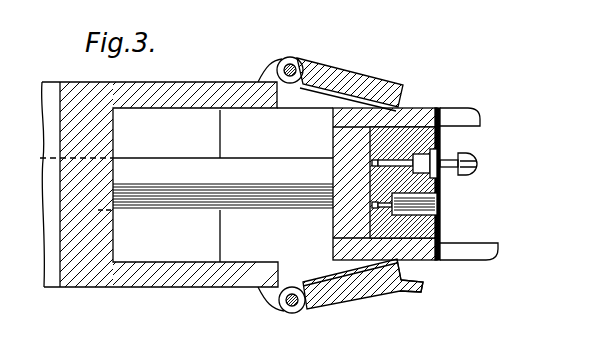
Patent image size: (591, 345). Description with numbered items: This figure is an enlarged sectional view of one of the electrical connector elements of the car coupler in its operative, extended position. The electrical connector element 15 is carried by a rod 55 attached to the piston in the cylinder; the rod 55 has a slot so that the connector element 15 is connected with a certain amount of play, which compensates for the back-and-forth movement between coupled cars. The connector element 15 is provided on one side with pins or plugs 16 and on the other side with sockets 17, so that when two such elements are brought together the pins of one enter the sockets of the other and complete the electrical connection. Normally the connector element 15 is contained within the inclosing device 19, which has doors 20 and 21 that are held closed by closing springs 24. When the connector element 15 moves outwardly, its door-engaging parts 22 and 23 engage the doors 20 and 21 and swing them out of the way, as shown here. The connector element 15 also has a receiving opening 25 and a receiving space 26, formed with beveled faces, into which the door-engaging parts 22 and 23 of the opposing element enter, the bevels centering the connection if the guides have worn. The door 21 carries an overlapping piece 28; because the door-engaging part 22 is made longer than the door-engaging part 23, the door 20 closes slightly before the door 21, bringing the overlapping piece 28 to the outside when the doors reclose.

The electrical connector element 15 is at (437, 143).
The pins or plugs 16 is at (478, 170).
The sockets 17 is at (440, 208).
The inclosing device 19 is at (215, 280).
The door 20 is at (360, 74).
The door 21 is at (352, 298).
The door-engaging part 22 is at (469, 262).
The door-engaging part 23 is at (455, 109).
The closing springs 24 is at (302, 62).
The receiving opening 25 is at (416, 107).
The receiving space 26 is at (423, 265).
The overlapping piece 28 is at (413, 290).
The rod 55 is at (186, 138).